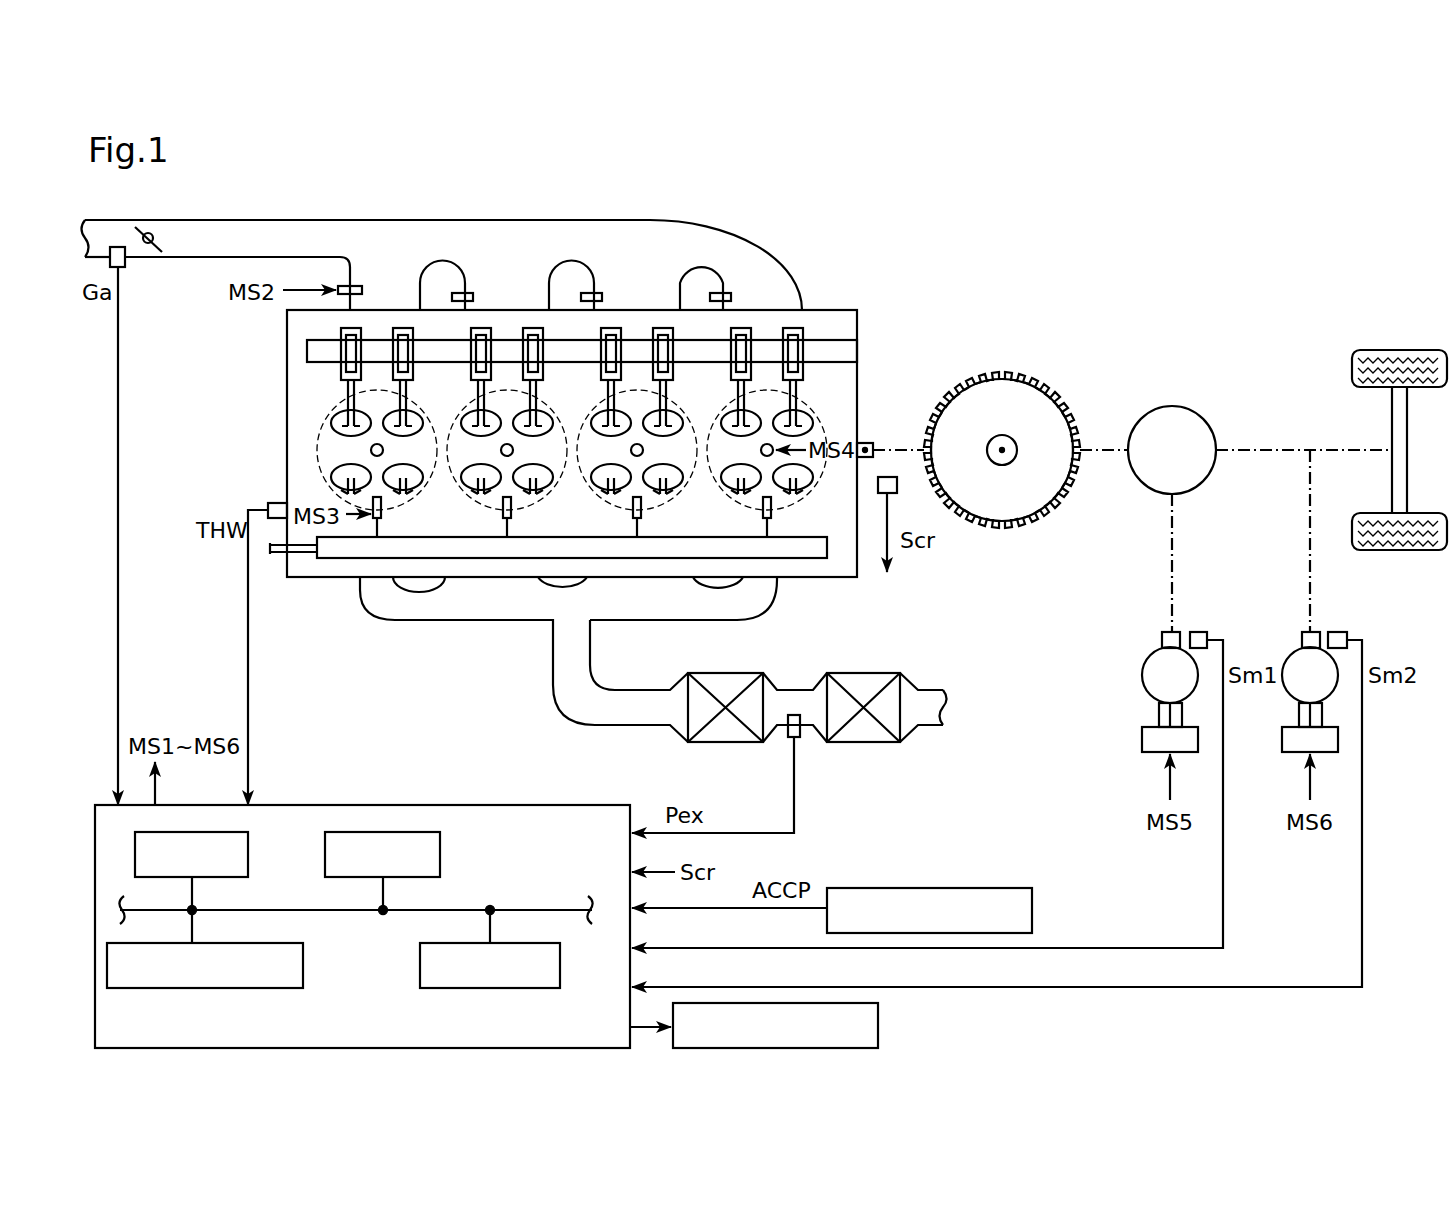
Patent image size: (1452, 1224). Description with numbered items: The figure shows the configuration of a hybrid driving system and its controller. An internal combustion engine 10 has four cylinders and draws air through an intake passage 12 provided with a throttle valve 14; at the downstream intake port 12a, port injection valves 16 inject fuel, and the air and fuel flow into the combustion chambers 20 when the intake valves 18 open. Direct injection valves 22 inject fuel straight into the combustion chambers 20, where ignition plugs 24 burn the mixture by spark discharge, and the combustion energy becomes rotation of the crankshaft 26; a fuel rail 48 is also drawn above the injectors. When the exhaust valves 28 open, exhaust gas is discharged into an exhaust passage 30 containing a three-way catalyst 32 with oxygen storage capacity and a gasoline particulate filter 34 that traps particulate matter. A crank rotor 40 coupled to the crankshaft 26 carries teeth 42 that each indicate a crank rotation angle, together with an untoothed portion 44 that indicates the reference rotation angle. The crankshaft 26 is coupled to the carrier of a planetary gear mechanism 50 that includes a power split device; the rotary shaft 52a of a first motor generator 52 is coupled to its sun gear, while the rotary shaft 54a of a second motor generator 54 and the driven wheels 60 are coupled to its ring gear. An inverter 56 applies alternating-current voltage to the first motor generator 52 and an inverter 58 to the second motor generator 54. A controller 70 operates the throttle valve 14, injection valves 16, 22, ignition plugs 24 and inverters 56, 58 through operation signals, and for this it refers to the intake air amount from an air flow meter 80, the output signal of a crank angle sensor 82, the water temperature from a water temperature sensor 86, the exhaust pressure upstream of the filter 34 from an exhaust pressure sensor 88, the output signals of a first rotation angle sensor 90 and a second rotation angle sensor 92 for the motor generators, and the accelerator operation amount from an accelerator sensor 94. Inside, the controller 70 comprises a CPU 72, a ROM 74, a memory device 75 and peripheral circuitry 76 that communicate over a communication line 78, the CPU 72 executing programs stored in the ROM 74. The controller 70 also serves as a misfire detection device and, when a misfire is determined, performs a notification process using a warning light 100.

The internal combustion engine 10 is at (860, 288).
The intake passage 12 is at (113, 228).
The intake port 12a is at (790, 272).
The throttle valve 14 is at (157, 237).
The port injection valves 16 is at (710, 296).
The intake valves 18 is at (345, 383).
The combustion chambers 20 is at (318, 447).
The direct injection valves 22 is at (382, 508).
The ignition plugs 24 is at (383, 450).
The crankshaft 26 is at (868, 440).
The exhaust valves 28 is at (396, 487).
The exhaust passage 30 is at (651, 610).
The three-way catalyst 32 is at (723, 667).
The gasoline particulate filter (GPF) 34 is at (863, 667).
The crank rotor 40 is at (1025, 414).
The teeth 42 is at (1056, 398).
The untoothed portion 44 is at (1071, 423).
The fuel rail / delivery pipe 48 is at (836, 338).
The planetary gear mechanism 50 is at (1212, 422).
The first motor generator 52 is at (1142, 670).
The rotary shaft of first motor generator 52a is at (1162, 642).
The second motor generator 54 is at (1284, 670).
The rotary shaft of second motor generator 54a is at (1303, 636).
The inverter 56 is at (1142, 740).
The inverter 58 is at (1282, 740).
The driven wheels 60 is at (1447, 549).
The controller 70 is at (362, 902).
The CPU 72 is at (250, 856).
The ROM 74 is at (442, 856).
The memory device 75 is at (562, 967).
The peripheral circuitry 76 is at (305, 967).
The communication line 78 is at (538, 905).
The air flow meter 80 is at (125, 267).
The crank angle sensor 82 is at (897, 490).
The water temperature sensor 86 is at (268, 501).
The exhaust pressure sensor 88 is at (802, 738).
The first rotation angle sensor 90 is at (1198, 632).
The second rotation angle sensor 92 is at (1338, 632).
The accelerator sensor 94 is at (1034, 908).
The warning light 100 is at (880, 1024).